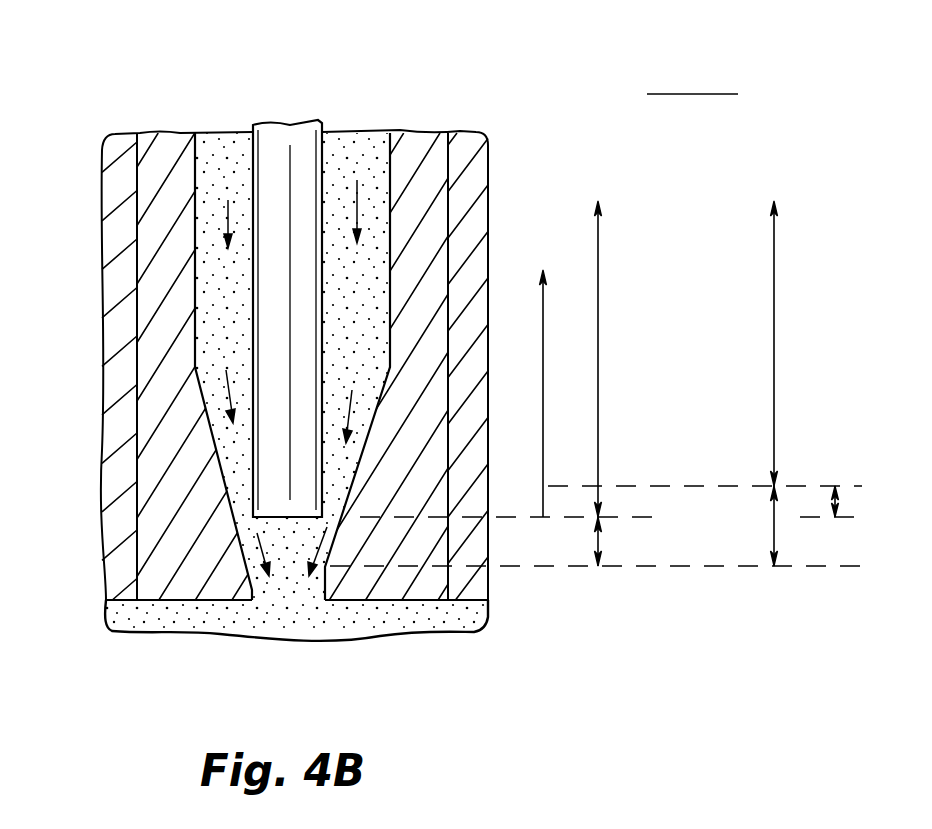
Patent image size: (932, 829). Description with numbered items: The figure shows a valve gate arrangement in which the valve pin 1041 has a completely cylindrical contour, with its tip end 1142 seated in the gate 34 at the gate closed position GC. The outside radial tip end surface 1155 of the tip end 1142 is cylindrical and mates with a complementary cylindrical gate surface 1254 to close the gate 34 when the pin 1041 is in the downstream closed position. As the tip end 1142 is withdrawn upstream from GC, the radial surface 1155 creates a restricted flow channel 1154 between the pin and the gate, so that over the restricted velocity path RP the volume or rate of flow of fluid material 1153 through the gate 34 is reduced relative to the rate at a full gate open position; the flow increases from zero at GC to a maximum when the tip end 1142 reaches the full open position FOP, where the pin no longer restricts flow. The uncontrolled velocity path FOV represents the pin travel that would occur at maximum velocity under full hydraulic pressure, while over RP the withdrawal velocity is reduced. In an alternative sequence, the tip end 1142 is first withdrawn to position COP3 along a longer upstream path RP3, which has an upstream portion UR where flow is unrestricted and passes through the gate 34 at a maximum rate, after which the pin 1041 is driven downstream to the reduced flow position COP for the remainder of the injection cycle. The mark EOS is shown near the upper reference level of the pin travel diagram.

The valve pin 1041 is at (283, 132).
The fluid material 1153 is at (360, 210).
The radial tip end surface 1155 is at (253, 493).
The restricted flow channel 1154 is at (197, 600).
The gate surface 1254 is at (260, 595).
The gate 34 is at (283, 603).
The tip end 1142 is at (299, 520).
The full open position FOP is at (543, 302).
The uncontrolled velocity path FOV is at (601, 246).
The restricted velocity path RP is at (603, 540).
The reduced flow position COP is at (617, 517).
The gate closed position GC is at (578, 567).
The initial withdrawal position COP3 is at (826, 486).
The longer upstream path length RP3 is at (778, 532).
The upstream unrestricted portion UR is at (840, 505).
The EOS reference line EOS is at (687, 94).